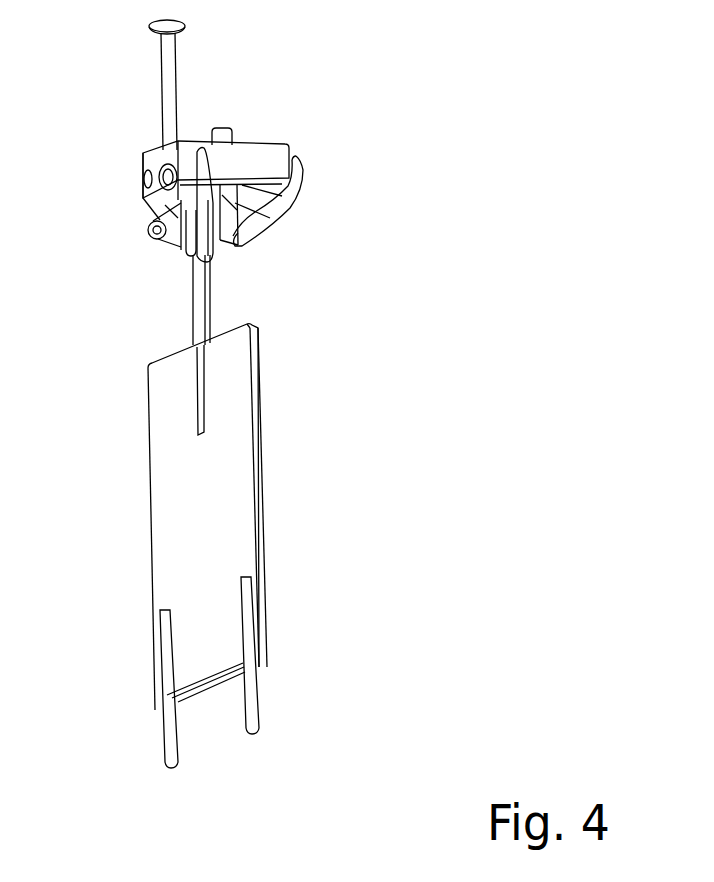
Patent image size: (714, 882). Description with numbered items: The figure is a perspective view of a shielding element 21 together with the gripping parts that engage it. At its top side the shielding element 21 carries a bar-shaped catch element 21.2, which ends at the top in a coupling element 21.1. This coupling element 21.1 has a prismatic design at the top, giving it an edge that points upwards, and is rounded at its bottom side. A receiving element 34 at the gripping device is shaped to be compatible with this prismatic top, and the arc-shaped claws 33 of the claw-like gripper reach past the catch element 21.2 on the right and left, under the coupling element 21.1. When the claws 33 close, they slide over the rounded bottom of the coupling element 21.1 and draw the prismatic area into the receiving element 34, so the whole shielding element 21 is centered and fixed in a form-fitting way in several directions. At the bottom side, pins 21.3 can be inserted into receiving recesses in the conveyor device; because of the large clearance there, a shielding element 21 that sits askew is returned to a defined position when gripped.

The receiving element 34 is at (144, 158).
The coupling element 21.1 is at (143, 198).
The claw-like gripper 33 is at (270, 220).
The bar-shaped catch element 21.2 is at (200, 300).
The shielding element 21 is at (175, 430).
The pin 21.3 is at (243, 730).